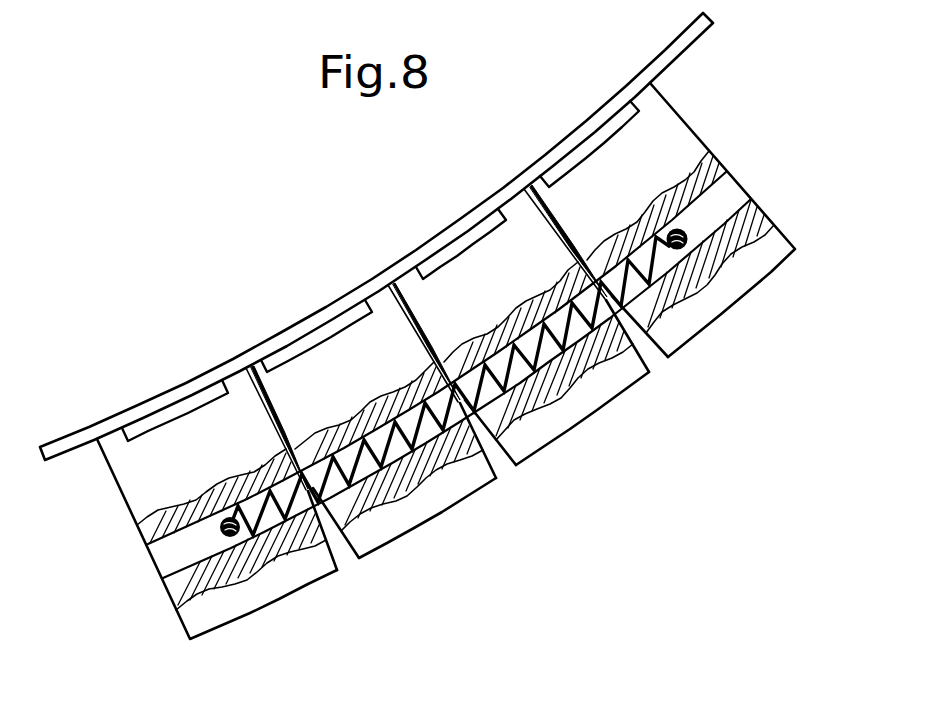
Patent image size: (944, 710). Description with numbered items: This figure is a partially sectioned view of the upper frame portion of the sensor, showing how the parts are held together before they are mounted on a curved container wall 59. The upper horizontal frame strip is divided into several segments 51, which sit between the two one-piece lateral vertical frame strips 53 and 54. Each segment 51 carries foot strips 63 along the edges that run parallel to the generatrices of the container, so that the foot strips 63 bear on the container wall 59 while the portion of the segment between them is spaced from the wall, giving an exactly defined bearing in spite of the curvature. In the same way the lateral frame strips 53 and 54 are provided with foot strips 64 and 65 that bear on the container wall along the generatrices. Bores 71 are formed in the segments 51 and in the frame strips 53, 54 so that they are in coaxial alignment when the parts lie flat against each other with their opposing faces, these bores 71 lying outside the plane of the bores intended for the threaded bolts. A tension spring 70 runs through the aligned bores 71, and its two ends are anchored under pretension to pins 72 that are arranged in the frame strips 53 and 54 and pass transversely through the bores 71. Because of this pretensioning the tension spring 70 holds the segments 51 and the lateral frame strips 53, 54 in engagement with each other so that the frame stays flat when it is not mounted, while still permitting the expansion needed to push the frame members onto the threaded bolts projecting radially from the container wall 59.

The container wall 59 is at (657, 60).
The foot strip 65 is at (230, 363).
The foot strips 63 is at (497, 195).
The foot strip 64 is at (640, 85).
The lateral frame strip 54 is at (148, 497).
The segment 51 is at (618, 380).
The lateral frame strip 53 is at (673, 133).
The tension spring 70 is at (550, 386).
The bores 71 is at (723, 183).
The pins 72 is at (700, 267).